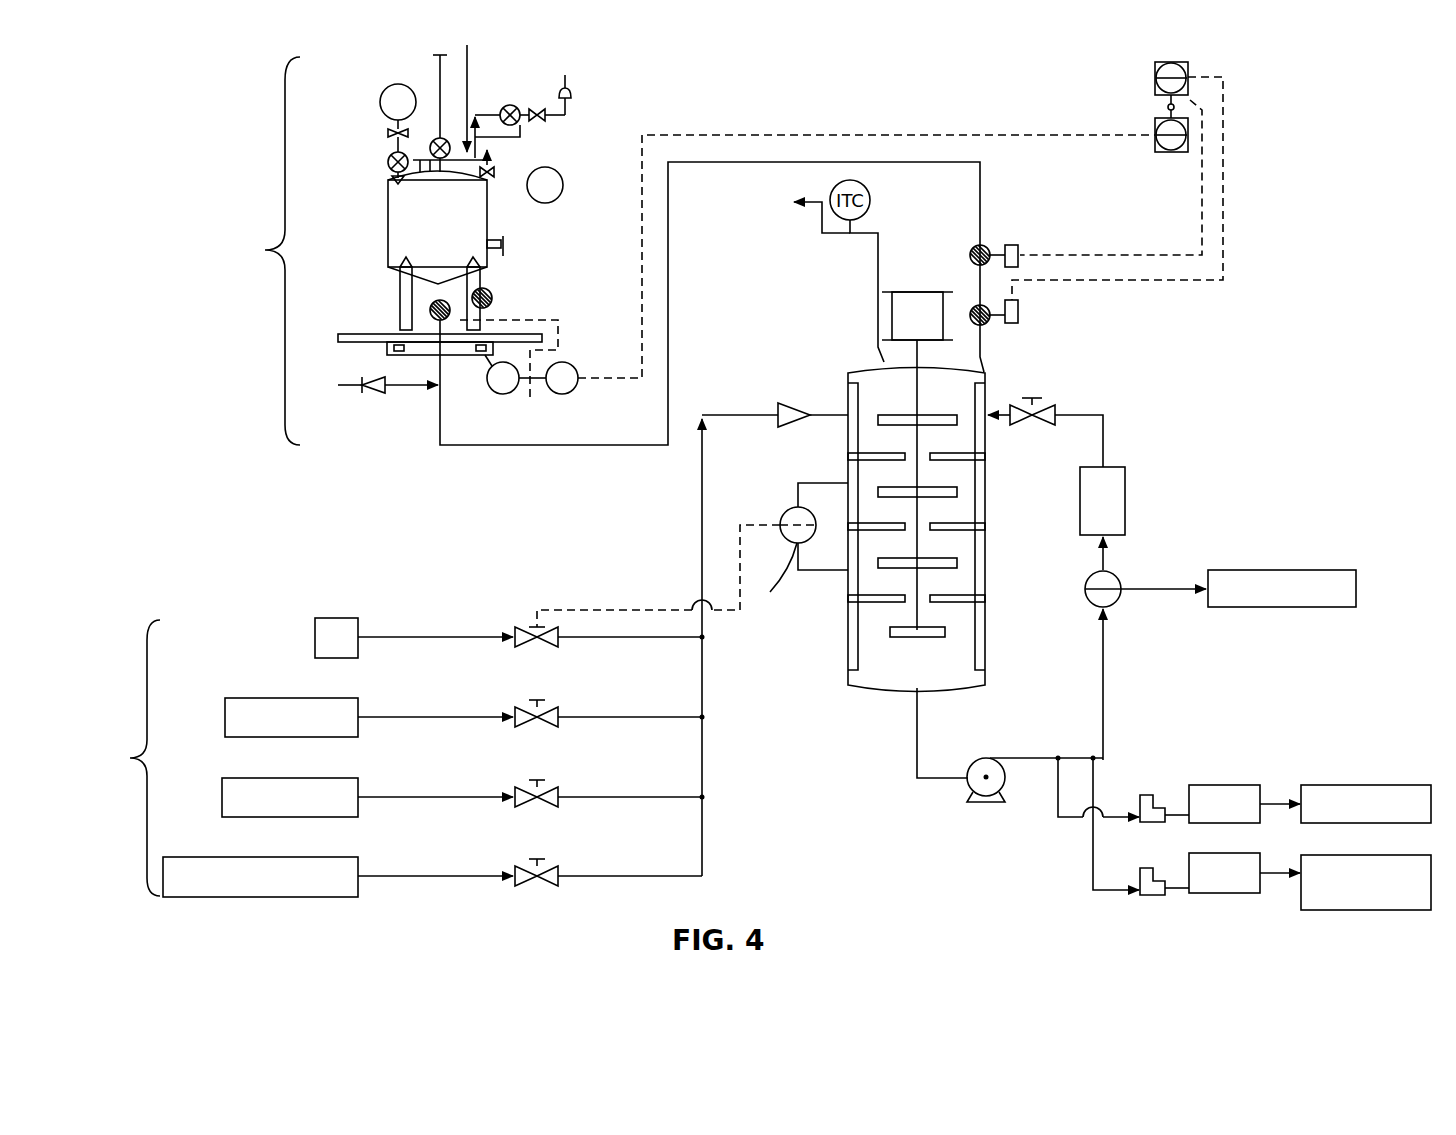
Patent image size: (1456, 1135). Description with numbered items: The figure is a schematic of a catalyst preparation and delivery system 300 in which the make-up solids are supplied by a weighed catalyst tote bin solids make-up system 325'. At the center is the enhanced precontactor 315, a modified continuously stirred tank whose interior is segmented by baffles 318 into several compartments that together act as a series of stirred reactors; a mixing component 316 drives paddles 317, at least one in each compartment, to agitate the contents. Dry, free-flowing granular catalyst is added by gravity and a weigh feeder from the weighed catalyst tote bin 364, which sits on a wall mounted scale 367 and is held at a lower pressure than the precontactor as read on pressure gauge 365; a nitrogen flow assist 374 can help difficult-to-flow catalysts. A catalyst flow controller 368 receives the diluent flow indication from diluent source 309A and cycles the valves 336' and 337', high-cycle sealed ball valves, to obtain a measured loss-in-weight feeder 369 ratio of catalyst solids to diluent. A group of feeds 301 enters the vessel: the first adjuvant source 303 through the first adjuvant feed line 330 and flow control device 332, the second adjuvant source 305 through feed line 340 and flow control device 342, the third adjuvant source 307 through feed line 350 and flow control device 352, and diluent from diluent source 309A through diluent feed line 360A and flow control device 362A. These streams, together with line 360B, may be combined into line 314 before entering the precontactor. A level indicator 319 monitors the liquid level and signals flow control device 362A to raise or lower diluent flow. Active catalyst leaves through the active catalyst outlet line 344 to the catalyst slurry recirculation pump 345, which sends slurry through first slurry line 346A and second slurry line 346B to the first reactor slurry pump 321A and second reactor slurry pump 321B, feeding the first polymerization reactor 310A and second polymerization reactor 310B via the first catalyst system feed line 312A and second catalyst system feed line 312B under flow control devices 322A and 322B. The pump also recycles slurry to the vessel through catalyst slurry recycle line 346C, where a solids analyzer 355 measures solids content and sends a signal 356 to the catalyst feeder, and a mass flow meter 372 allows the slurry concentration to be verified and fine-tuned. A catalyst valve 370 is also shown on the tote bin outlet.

The catalyst preparation and delivery system 300 is at (218, 128).
The adjuvant feed sources 301 is at (120, 758).
The first adjuvant source 303 is at (292, 698).
The second adjuvant source 305 is at (292, 778).
The third adjuvant source 307 is at (232, 857).
The diluent source 309A is at (338, 616).
The first polymerization reactor 310A is at (1342, 782).
The second polymerization reactor 310B is at (1342, 910).
The first catalyst system feed line 312A is at (1273, 797).
The second catalyst system feed line 312B is at (1273, 878).
The combined feed line 314 is at (745, 413).
The enhanced precontactor 315 is at (870, 670).
The mixing component 316 is at (917, 290).
The paddles 317 is at (888, 411).
The baffles 318 is at (985, 457).
The level indicator 319 is at (785, 512).
The first reactor slurry pump 321A is at (1155, 800).
The second reactor slurry pump 321B is at (1153, 896).
The flow control device 322A is at (1212, 804).
The flow control device 322B is at (1212, 873).
The weighed catalyst tote bin solids make-up system 325' is at (254, 251).
The first adjuvant feed line 330 is at (582, 720).
The flow control device 332 is at (523, 708).
The valve 336' is at (1021, 248).
The valve 337' is at (1021, 324).
The second adjuvant feed line 340 is at (582, 800).
The flow control device 342 is at (523, 788).
The active catalyst outlet line 344 is at (913, 759).
The catalyst slurry recirculation pump 345 is at (968, 784).
The first slurry line 346A is at (1117, 812).
The second slurry line 346B is at (1113, 894).
The catalyst slurry recycle line 346C is at (1102, 682).
The third adjuvant feed line 350 is at (582, 880).
The flow control device 352 is at (523, 867).
The solids analyzer 355 is at (1113, 578).
The signal 356 is at (1188, 582).
The diluent feed line 360A is at (582, 640).
The line 360B is at (965, 358).
The flow control device 362A is at (522, 628).
The weighed catalyst tote bin 364 is at (461, 240).
The pressure gauge 365 is at (388, 93).
The wall mounted scale 367 is at (400, 327).
The catalyst flow controller 368 is at (1172, 60).
The loss in weight feeder 369 is at (503, 394).
The container valve 370 is at (490, 292).
The mass flow meter 372 is at (500, 170).
The nitrogen flow assist 374 is at (362, 398).